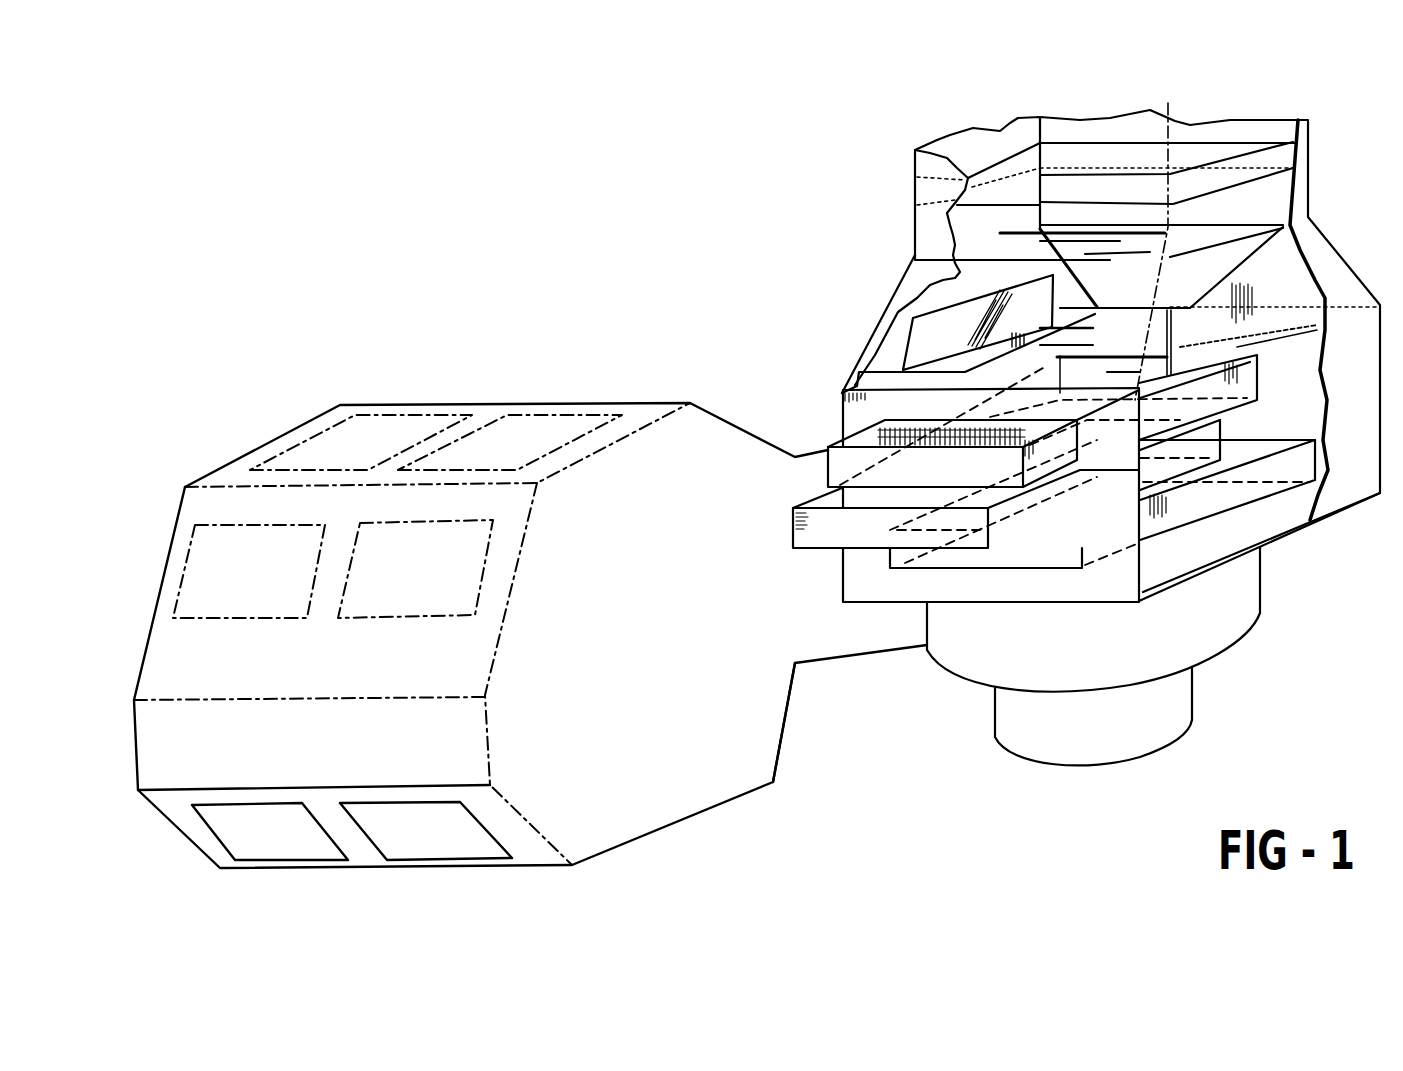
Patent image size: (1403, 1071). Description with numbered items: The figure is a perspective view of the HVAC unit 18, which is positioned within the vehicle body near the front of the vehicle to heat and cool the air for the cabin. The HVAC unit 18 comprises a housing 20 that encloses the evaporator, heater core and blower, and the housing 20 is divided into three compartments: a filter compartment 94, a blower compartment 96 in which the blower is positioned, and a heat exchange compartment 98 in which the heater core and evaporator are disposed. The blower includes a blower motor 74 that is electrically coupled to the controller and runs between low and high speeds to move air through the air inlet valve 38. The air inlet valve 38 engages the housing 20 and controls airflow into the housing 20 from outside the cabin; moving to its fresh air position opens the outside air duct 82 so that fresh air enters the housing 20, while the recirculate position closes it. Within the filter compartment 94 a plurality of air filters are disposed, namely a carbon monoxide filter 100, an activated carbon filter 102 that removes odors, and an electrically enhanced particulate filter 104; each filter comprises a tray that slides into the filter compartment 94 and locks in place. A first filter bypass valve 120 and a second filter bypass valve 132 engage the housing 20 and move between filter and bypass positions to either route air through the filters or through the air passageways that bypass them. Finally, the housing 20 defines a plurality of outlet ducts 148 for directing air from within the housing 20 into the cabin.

The HVAC unit 18 is at (247, 376).
The housing 20 is at (773, 782).
The air inlet valve 38 is at (1146, 210).
The blower motor 74 is at (1048, 730).
The outside air duct 82 is at (1100, 113).
The filter compartment 94 is at (1265, 420).
The blower compartment 96 is at (1163, 625).
The heat exchange compartment 98 is at (580, 713).
The carbon monoxide filter 100 is at (1043, 553).
The activated carbon filter 102 is at (793, 540).
The particulate filter 104 is at (826, 462).
The first filter bypass valve 120 is at (940, 327).
The second filter bypass valve 132 is at (1249, 335).
The outlet ducts 148 is at (230, 827).